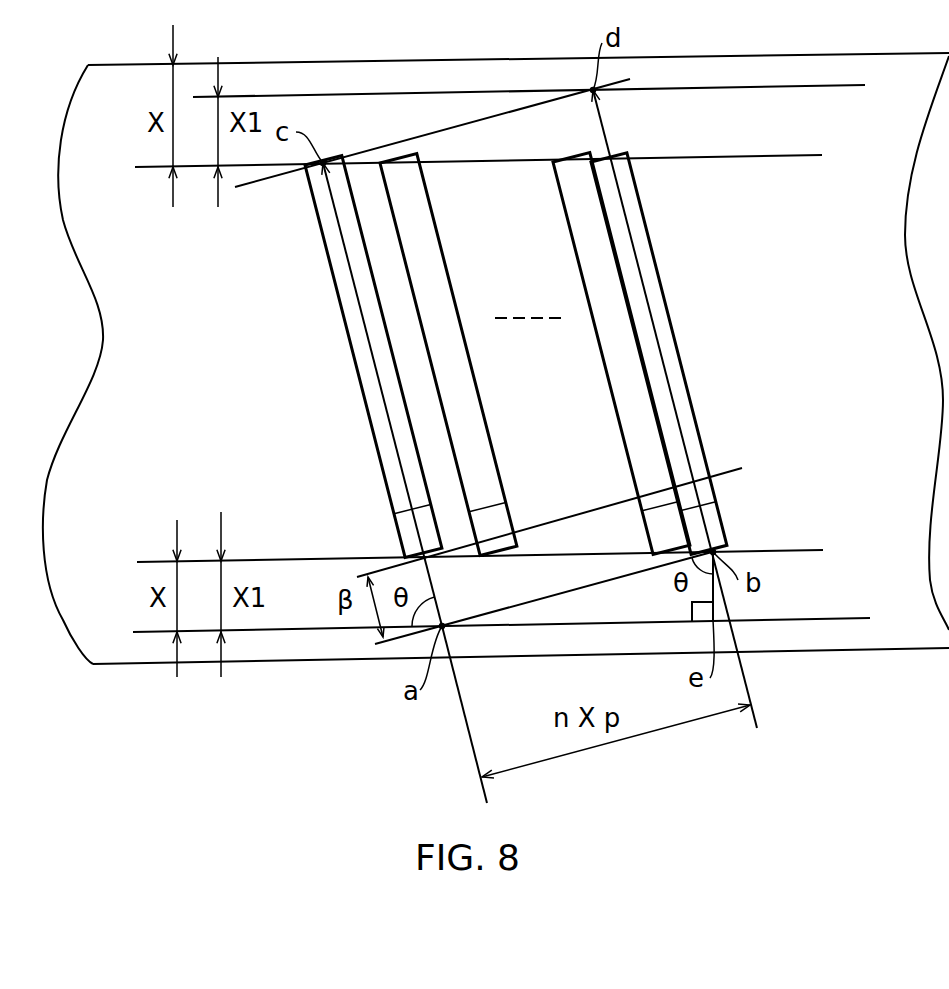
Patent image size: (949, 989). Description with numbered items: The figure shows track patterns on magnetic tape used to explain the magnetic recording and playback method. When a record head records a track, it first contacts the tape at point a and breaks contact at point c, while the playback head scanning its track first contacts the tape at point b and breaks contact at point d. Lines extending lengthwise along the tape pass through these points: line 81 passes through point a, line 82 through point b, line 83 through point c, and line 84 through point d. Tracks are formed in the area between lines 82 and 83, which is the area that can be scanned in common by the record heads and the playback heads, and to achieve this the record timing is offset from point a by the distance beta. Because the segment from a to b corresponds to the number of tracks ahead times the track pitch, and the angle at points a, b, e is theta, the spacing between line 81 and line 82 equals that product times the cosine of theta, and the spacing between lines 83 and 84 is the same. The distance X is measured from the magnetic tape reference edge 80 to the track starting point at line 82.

The magnetic tape reference edge 80 is at (820, 650).
The line through point a 81 is at (813, 618).
The line through point b 82 is at (793, 550).
The line through point c 83 is at (777, 155).
The line through point d 84 is at (792, 85).